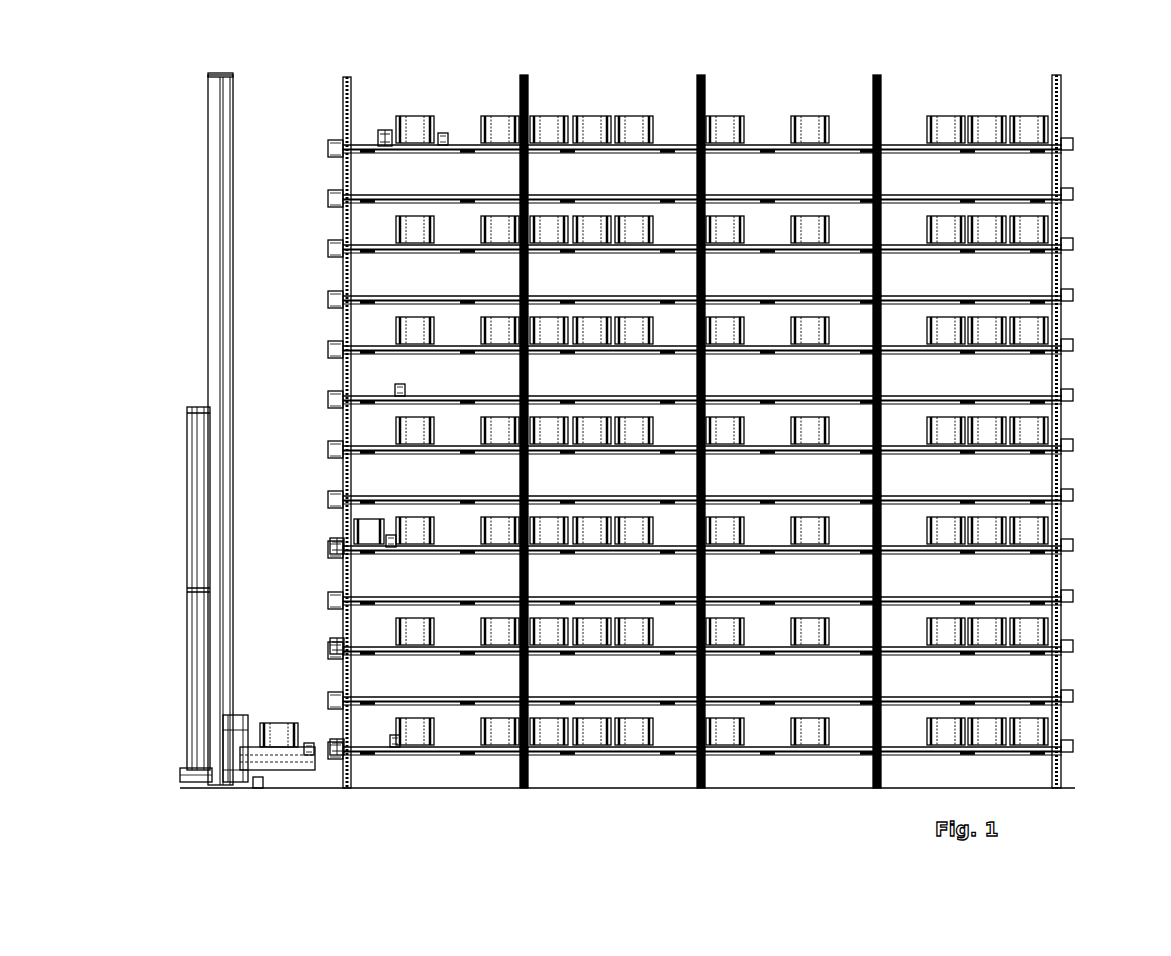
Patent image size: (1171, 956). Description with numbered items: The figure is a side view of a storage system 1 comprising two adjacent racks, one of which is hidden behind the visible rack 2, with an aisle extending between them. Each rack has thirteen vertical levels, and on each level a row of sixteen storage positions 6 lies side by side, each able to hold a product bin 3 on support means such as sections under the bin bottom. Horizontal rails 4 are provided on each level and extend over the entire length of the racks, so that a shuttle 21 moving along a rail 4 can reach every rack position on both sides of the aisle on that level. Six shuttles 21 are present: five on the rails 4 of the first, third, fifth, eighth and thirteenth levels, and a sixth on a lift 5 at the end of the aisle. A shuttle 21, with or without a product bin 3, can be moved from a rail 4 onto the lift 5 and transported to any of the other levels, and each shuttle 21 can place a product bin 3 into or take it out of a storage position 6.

The storage system 1 is at (1108, 122).
The rack 2 is at (1118, 270).
The product bin 3 is at (632, 333).
The horizontal rail 4 is at (592, 400).
The lift 5 is at (260, 458).
The storage position 6 is at (556, 490).
The shuttle 21 is at (446, 134).